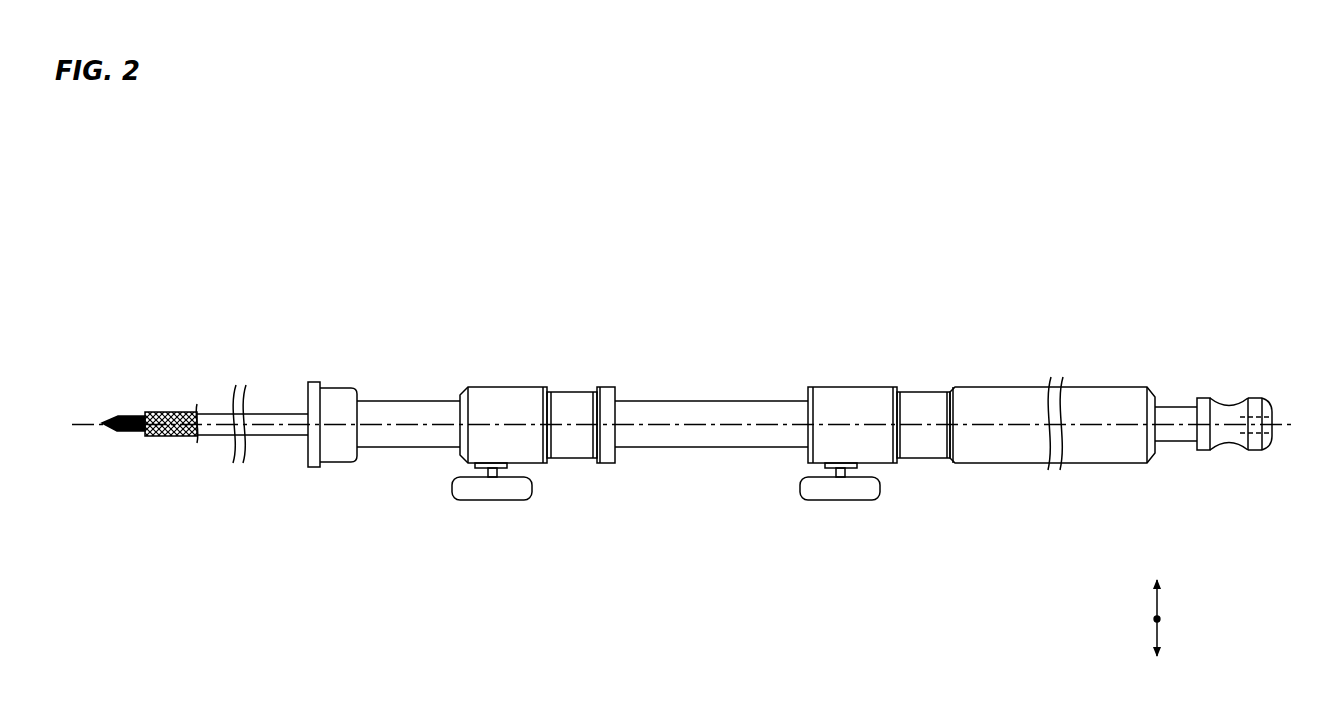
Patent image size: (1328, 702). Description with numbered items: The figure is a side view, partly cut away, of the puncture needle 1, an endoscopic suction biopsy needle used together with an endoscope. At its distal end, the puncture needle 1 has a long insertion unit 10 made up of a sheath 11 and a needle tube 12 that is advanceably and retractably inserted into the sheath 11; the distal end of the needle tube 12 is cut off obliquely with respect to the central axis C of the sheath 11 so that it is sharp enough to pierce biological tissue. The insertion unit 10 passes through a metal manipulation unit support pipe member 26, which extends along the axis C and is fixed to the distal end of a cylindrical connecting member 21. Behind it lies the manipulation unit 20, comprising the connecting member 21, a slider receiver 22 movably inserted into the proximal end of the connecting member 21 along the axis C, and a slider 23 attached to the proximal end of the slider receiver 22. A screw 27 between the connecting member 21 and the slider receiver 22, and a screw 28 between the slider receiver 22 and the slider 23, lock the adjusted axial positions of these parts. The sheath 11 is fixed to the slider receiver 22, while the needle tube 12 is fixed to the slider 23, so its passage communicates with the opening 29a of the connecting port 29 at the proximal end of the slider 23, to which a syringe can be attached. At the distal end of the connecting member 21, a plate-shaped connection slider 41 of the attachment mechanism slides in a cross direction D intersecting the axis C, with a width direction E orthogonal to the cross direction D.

The puncture needle 1 is at (139, 271).
The insertion unit 10 is at (153, 344).
The sheath 11 is at (136, 411).
The needle tube 12 is at (103, 414).
The manipulation unit 20 is at (1167, 367).
The connecting member 21 is at (407, 437).
The slider receiver 22 is at (712, 409).
The slider 23 is at (998, 395).
The manipulation unit support pipe member 26 is at (265, 411).
The screw 27 is at (492, 493).
The screw 28 is at (842, 493).
The connecting port 29 is at (1228, 437).
The opening 29a is at (1281, 415).
The connection slider 41 is at (315, 388).
The axis C is at (86, 430).
The cross direction D is at (1161, 619).
The width direction E is at (1154, 640).